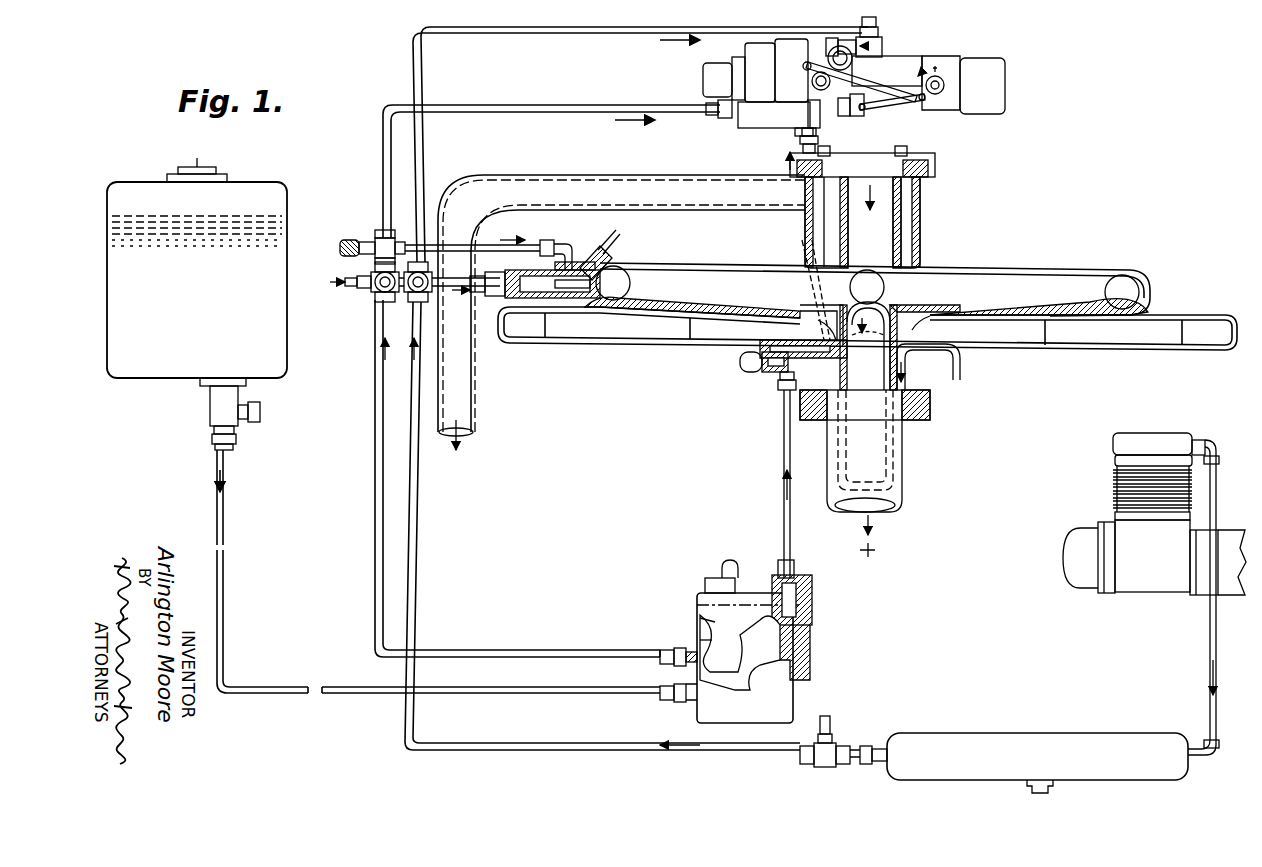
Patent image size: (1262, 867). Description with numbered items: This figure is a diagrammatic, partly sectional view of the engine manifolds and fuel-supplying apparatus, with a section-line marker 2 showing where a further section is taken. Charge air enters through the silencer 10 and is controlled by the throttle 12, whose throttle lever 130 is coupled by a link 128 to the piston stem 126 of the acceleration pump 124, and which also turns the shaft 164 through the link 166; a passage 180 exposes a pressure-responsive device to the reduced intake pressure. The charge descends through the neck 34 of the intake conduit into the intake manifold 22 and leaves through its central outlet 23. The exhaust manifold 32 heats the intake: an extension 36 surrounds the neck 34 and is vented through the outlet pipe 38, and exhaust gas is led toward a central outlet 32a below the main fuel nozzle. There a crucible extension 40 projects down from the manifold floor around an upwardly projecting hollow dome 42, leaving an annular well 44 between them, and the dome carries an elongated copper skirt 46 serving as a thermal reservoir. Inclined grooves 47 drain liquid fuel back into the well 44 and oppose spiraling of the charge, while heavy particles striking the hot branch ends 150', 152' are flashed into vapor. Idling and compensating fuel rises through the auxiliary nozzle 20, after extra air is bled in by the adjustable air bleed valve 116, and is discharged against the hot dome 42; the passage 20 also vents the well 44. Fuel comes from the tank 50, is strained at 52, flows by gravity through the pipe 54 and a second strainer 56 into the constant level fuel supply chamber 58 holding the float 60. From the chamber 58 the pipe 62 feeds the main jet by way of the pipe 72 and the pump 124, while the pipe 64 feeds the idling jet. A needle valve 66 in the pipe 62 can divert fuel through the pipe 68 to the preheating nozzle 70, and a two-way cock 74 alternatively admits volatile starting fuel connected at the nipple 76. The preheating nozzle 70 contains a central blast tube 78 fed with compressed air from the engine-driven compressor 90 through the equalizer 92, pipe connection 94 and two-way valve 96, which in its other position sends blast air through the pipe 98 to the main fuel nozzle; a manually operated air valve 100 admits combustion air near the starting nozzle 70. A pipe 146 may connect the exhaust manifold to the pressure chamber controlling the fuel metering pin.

The section line / fitting 2 is at (882, 32).
The silencer 10 is at (1005, 82).
The throttle 12 is at (950, 45).
The auxiliary nozzle 20 is at (872, 355).
The intake manifold 22 is at (1000, 266).
The outlet 23 is at (630, 283).
The exhaust manifold 32 is at (595, 345).
The central outlet 32a is at (905, 482).
The neck 34 is at (869, 208).
The extension 36 is at (912, 225).
The outlet pipe 38 is at (470, 410).
The crucible extension 40 is at (915, 360).
The hollow dome 42 is at (900, 328).
The annular well 44 is at (818, 330).
The skirt 46 is at (888, 452).
The inclined grooves 47 is at (812, 288).
The tank 50 is at (272, 340).
The strainer 52 is at (232, 410).
The pipe 54 is at (226, 512).
The second strainer 56 is at (720, 715).
The constant level fuel supply chamber 58 is at (714, 620).
The float 60 is at (710, 640).
The pipe 62 is at (376, 513).
The pipe 64 is at (792, 535).
The needle valve 66 is at (383, 245).
The pipe 68 is at (490, 238).
The preheating nozzle 70 is at (575, 280).
The pipe 72 is at (540, 105).
The two-way cock 74 is at (375, 300).
The nipple 76 is at (350, 290).
The central blast tube 78 is at (548, 300).
The compressor 90 is at (1170, 433).
The equalizer 92 is at (955, 733).
The pipe connection 94 is at (705, 763).
The two-way valve 96 is at (408, 302).
The pipe 98 is at (562, 36).
The manually operated air valve 100 is at (605, 262).
The adjustable air bleed valve 116 is at (765, 372).
The acceleration pump 124 is at (750, 128).
The piston stem 126 is at (860, 116).
The link 128 is at (905, 102).
The throttle lever 130 is at (935, 100).
The pipe 146 is at (795, 150).
The hot end 150' is at (692, 315).
The hot end 152' is at (1064, 300).
The shaft 164 is at (817, 88).
The link 166 is at (880, 90).
The passage 180 is at (898, 56).